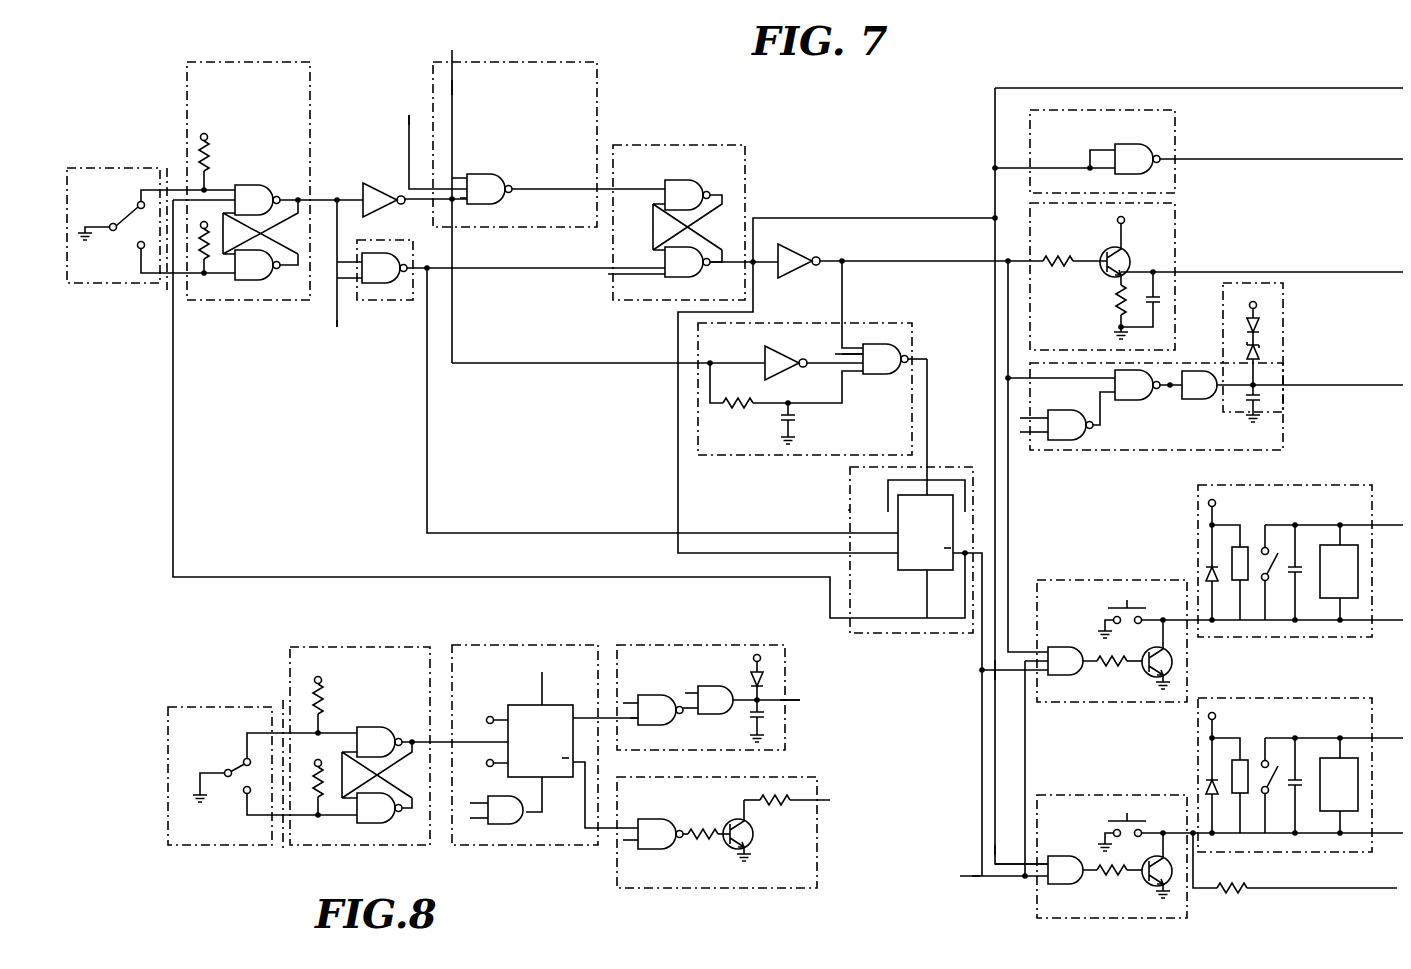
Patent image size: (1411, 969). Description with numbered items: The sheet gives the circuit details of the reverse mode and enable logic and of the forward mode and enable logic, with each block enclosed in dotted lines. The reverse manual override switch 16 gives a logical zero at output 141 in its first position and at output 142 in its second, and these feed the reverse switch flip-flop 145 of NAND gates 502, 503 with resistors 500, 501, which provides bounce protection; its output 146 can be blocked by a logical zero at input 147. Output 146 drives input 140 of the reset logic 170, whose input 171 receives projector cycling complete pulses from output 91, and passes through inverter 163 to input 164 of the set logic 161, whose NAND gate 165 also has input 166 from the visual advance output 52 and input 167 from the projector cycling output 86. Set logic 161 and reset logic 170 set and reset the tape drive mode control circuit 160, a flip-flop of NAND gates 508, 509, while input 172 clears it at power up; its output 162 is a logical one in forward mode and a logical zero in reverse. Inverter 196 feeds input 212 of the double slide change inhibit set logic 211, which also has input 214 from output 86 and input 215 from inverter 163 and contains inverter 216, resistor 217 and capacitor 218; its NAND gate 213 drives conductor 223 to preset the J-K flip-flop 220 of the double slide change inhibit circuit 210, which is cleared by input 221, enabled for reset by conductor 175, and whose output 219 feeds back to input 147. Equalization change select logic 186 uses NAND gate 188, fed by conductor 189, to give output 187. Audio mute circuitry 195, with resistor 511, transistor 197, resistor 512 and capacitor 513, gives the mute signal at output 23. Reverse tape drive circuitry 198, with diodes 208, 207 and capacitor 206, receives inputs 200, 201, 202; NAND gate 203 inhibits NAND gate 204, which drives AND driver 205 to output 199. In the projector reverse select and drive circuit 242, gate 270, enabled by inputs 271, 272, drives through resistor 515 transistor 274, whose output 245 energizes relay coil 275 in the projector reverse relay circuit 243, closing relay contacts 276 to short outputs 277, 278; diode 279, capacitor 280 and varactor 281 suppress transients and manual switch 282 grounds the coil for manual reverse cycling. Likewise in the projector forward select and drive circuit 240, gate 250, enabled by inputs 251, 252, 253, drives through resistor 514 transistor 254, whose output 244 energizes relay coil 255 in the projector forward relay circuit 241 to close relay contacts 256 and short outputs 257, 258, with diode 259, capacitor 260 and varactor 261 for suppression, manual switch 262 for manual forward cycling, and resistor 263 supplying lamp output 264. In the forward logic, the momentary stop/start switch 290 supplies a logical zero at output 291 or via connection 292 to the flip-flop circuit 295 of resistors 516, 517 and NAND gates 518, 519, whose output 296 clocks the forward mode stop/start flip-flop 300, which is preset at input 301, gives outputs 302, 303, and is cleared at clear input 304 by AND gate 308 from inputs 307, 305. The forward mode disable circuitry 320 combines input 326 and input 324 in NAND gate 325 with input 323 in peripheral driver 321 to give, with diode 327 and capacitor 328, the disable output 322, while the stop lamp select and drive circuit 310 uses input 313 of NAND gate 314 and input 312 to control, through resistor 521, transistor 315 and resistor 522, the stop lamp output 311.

In FIG. 7, the reverse manual override switch 16 is at (113, 168).
In FIG. 7, the output 141 is at (167, 185).
In FIG. 7, the output 142 is at (167, 290).
In FIG. 7, the reverse switch flip-flop 145 is at (259, 62).
In FIG. 7, the resistor 500 is at (210, 152).
In FIG. 7, the resistor 501 is at (207, 246).
In FIG. 7, the NAND gate 502 is at (258, 185).
In FIG. 7, the NAND gate 503 is at (250, 281).
In FIG. 7, the output 146 is at (320, 190).
In FIG. 7, the input 147 is at (173, 455).
In FIG. 7, the input 140 is at (357, 262).
In FIG. 7, the reset logic 170 is at (385, 300).
In FIG. 7, the input 171 is at (337, 322).
In FIG. 7, the output 91 is at (323, 344).
In FIG. 7, the inverter 163 is at (385, 176).
In FIG. 7, the input 166 is at (409, 143).
In FIG. 7, the output 52 is at (418, 77).
In FIG. 7, the output 86 is at (466, 4).
In FIG. 7, the input 167 is at (452, 88).
In FIG. 7, the tape drive mode control set logic 161 is at (553, 62).
In FIG. 7, the NAND gate 165 is at (497, 178).
In FIG. 7, the input 164 is at (462, 200).
In FIG. 7, the tape drive mode control circuit 160 is at (715, 145).
In FIG. 7, the NAND gate 508 is at (686, 180).
In FIG. 7, the NAND gate 509 is at (686, 277).
In FIG. 7, the input 172 is at (625, 276).
In FIG. 7, the output 162 is at (757, 258).
In FIG. 7, the inverter 196 is at (813, 251).
In FIG. 7, the input 212 is at (845, 283).
In FIG. 7, the double slide change inhibit set logic 211 is at (892, 323).
In FIG. 7, the input 214 is at (850, 352).
In FIG. 7, the NAND gate 213 is at (883, 375).
In FIG. 7, the inverter 216 is at (782, 380).
In FIG. 7, the resistor 217 is at (785, 402).
In FIG. 7, the capacitor 218 is at (797, 421).
In FIG. 7, the conductor 223 is at (928, 411).
In FIG. 7, the JK flip-flop 220 is at (948, 467).
In FIG. 7, the double slide change inhibit circuit 210 is at (850, 511).
In FIG. 7, the output 219 is at (965, 551).
In FIG. 7, the input 221 is at (927, 613).
In FIG. 7, the input 215 is at (578, 365).
In FIG. 7, the conductor 175 is at (678, 489).
In FIG. 7, the equalization change select logic 186 is at (1177, 126).
In FIG. 7, the NAND gate 188 is at (1135, 145).
In FIG. 7, the conductor 189 is at (1017, 171).
In FIG. 7, the output 187 is at (1305, 158).
In FIG. 7, the audio mute circuitry 195 is at (1178, 238).
In FIG. 7, the resistor 511 is at (1060, 258).
In FIG. 7, the transistor 197 is at (1128, 258).
In FIG. 7, the resistor 512 is at (1118, 305).
In FIG. 7, the capacitor 513 is at (1160, 291).
In FIG. 7, the output 23 is at (1340, 272).
In FIG. 7, the reverse tape drive circuitry 198 is at (1285, 313).
In FIG. 7, the diode 208 is at (1262, 326).
In FIG. 7, the diode 207 is at (1262, 361).
In FIG. 7, the output 199 is at (1373, 385).
In FIG. 7, the capacitor 206 is at (1250, 411).
In FIG. 7, the input 200 is at (1095, 380).
In FIG. 7, the input 201 is at (1025, 418).
In FIG. 7, the input 202 is at (1020, 441).
In FIG. 7, the NAND gate 203 is at (1081, 415).
In FIG. 7, the NAND gate 204 is at (1135, 401).
In FIG. 7, the AND driver 205 is at (1200, 400).
In FIG. 7, the projector reverse relay circuit 243 is at (1335, 482).
In FIG. 7, the relay coil 275 is at (1247, 547).
In FIG. 7, the diode 279 is at (1205, 576).
In FIG. 7, the relay contacts 276 is at (1282, 572).
In FIG. 7, the capacitor 280 is at (1298, 565).
In FIG. 7, the varactor 281 is at (1353, 583).
In FIG. 7, the output 277 is at (1390, 525).
In FIG. 7, the output 278 is at (1388, 622).
In FIG. 7, the projector reverse select and drive circuit 242 is at (1120, 580).
In FIG. 7, the manual switch 282 is at (1130, 607).
In FIG. 7, the gate 270 is at (1070, 643).
In FIG. 7, the input 271 is at (1015, 652).
In FIG. 7, the input 272 is at (1008, 678).
In FIG. 7, the resistor 515 is at (1117, 672).
In FIG. 7, the transistor 274 is at (1145, 681).
In FIG. 7, the output 245 is at (1193, 636).
In FIG. 7, the projector forward relay circuit 241 is at (1318, 698).
In FIG. 7, the relay coil 255 is at (1245, 760).
In FIG. 7, the diode 259 is at (1205, 789).
In FIG. 7, the relay contacts 256 is at (1281, 785).
In FIG. 7, the capacitor 260 is at (1297, 777).
In FIG. 7, the varactor 261 is at (1353, 796).
In FIG. 7, the output 257 is at (1390, 738).
In FIG. 7, the output 258 is at (1388, 835).
In FIG. 7, the projector forward select and drive circuit 240 is at (1100, 795).
In FIG. 7, the gate 250 is at (1070, 849).
In FIG. 7, the input 251 is at (997, 861).
In FIG. 7, the input 252 is at (1005, 884).
In FIG. 7, the input 253 is at (977, 880).
In FIG. 7, the resistor 514 is at (1115, 887).
In FIG. 7, the transistor 254 is at (1145, 891).
In FIG. 7, the manual switch 262 is at (1133, 821).
In FIG. 7, the output 244 is at (1193, 846).
In FIG. 7, the resistor 263 is at (1239, 903).
In FIG. 7, the output 264 is at (1385, 888).
In FIG. 8, the momentary manual stop/start switch 290 is at (213, 703).
In FIG. 8, the output 291 is at (283, 735).
In FIG. 8, the connection 292 is at (283, 850).
In FIG. 8, the flip-flop circuit 295 is at (393, 647).
In FIG. 8, the resistor 516 is at (327, 703).
In FIG. 8, the resistor 517 is at (326, 788).
In FIG. 8, the NAND gate 518 is at (375, 723).
In FIG. 8, the NAND gate 519 is at (375, 823).
In FIG. 8, the output 296 is at (432, 742).
In FIG. 8, the forward mode stop/start flip-flop 300 is at (567, 645).
In FIG. 8, the input 301 is at (545, 682).
In FIG. 8, the output 302 is at (612, 722).
In FIG. 8, the output 303 is at (607, 832).
In FIG. 8, the clear input 304 is at (545, 800).
In FIG. 8, the AND gate 308 is at (520, 824).
In FIG. 8, the input 307 is at (478, 803).
In FIG. 8, the input 305 is at (472, 819).
In FIG. 8, the forward mode disable circuitry 320 is at (703, 645).
In FIG. 8, the NAND gate 325 is at (643, 697).
In FIG. 8, the input 326 is at (633, 703).
In FIG. 8, the input 324 is at (631, 716).
In FIG. 8, the peripheral driver 321 is at (710, 714).
In FIG. 8, the input 323 is at (685, 693).
In FIG. 8, the diode 327 is at (765, 683).
In FIG. 8, the output 322 is at (785, 703).
In FIG. 8, the capacitor 328 is at (768, 716).
In FIG. 8, the stop lamp select and drive circuit 310 is at (818, 866).
In FIG. 8, the NAND gate 313 is at (631, 819).
In FIG. 8, the NAND gate 314 is at (680, 822).
In FIG. 8, the input 312 is at (630, 846).
In FIG. 8, the resistor 521 is at (709, 847).
In FIG. 8, the transistor 315 is at (755, 835).
In FIG. 8, the resistor 522 is at (770, 800).
In FIG. 8, the output 311 is at (826, 800).